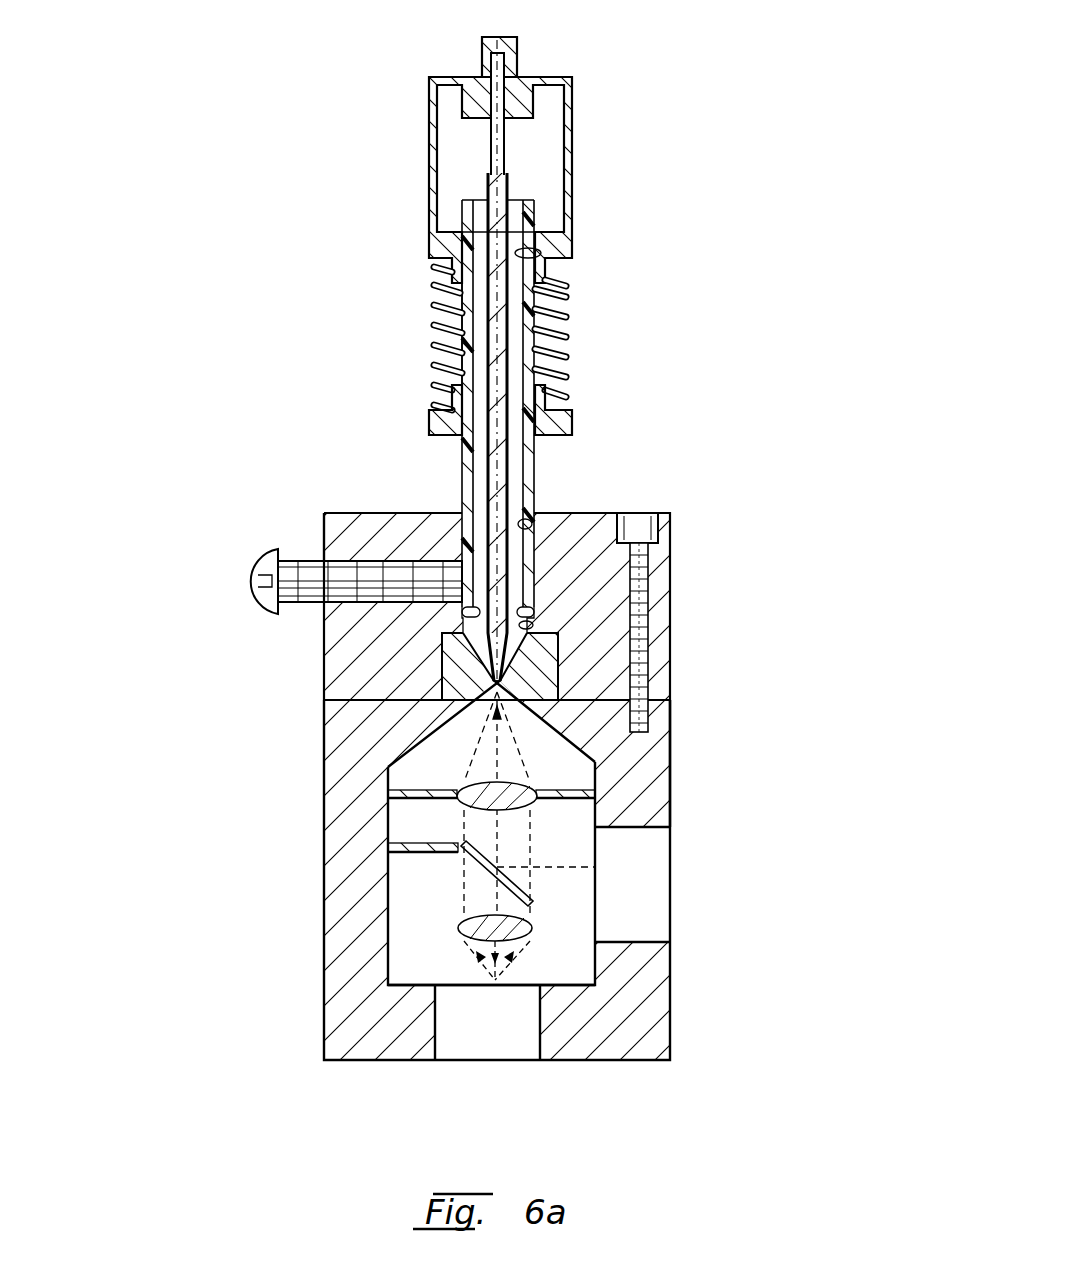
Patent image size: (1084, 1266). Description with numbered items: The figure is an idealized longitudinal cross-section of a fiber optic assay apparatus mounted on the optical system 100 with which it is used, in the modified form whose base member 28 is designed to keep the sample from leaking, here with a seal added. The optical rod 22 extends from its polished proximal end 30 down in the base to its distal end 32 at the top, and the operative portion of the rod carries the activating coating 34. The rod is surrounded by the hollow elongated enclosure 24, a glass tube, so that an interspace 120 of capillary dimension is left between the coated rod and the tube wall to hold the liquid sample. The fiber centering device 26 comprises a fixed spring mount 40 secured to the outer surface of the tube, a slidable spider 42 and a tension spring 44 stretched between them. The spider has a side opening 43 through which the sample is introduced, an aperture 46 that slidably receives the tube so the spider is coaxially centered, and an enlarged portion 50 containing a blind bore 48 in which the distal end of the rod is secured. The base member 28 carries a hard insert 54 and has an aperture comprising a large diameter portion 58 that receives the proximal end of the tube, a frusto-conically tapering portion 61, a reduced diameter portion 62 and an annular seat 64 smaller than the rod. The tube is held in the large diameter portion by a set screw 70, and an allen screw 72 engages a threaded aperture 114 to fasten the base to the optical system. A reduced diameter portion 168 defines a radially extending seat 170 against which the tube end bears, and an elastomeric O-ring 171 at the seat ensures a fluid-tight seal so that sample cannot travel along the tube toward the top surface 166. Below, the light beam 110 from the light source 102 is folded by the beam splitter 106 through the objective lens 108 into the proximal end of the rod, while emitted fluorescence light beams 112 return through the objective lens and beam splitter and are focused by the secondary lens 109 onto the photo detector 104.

The optical rod 22 is at (494, 140).
The hollow elongated enclosure 24 is at (458, 318).
The fiber centering device 26 is at (426, 118).
The base member 28 is at (690, 613).
The proximal end 30 is at (492, 705).
The distal end 32 is at (494, 44).
The coating 34 is at (495, 355).
The fixed spring mount 40 is at (574, 420).
The slidable spider 42 is at (574, 135).
The opening 43 is at (560, 160).
The tension spring 44 is at (569, 297).
The aperture 46 is at (542, 252).
The blind bore 48 is at (502, 72).
The enlarged portion 50 is at (508, 37).
The hard insert 54 is at (448, 650).
The large diameter portion 58 is at (523, 514).
The frusto-conically tapering portion 61 is at (476, 648).
The reduced diameter portion 62 is at (502, 673).
The annular seat 64 is at (501, 684).
The set screw 70 is at (317, 561).
The allen screw 72 is at (646, 605).
The optical system 100 is at (686, 749).
The light source 102 is at (662, 843).
The photo detector 104 is at (522, 1052).
The beam splitter 106 is at (472, 872).
The objective lens 108 is at (466, 802).
The secondary lens 109 is at (468, 930).
The light beam 110 is at (566, 866).
The light beams 112 is at (475, 744).
The threaded aperture 114 is at (706, 761).
The interspace 120 is at (478, 352).
The top surface 166 is at (368, 513).
The reduced diameter portion 168 is at (528, 623).
The seat 170 is at (462, 610).
The O-ring 171 is at (534, 608).